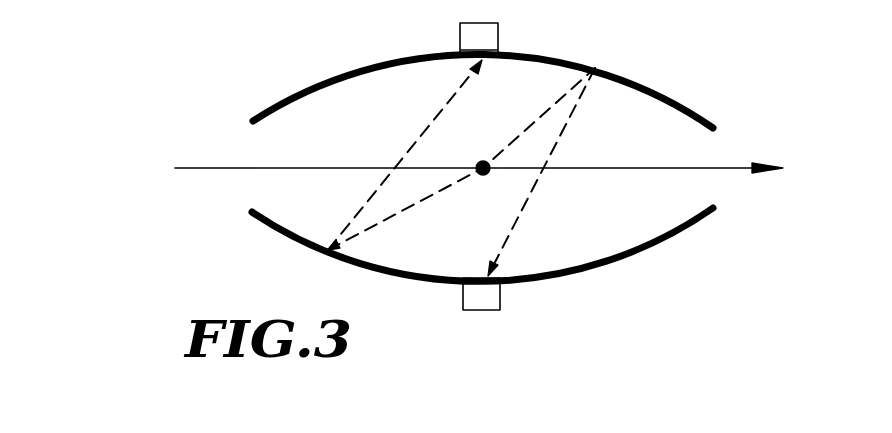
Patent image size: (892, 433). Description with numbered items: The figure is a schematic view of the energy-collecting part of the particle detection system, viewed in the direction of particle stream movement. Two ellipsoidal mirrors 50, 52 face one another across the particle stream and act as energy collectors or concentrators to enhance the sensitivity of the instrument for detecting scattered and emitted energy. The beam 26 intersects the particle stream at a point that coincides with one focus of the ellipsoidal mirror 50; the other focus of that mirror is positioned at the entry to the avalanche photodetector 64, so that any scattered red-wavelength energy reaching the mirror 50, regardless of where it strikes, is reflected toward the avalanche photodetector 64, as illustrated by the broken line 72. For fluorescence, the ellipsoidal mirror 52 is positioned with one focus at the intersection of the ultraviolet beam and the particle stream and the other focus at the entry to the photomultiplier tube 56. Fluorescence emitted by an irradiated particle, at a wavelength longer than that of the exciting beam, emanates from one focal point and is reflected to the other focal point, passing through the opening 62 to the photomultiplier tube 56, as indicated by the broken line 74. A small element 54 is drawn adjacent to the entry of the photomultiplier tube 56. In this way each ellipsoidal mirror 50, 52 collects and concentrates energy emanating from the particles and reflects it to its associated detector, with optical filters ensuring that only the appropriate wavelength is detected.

The beam 26 is at (195, 166).
The ellipsoidal mirror 50 is at (671, 248).
The ellipsoidal mirror 52 is at (323, 82).
The lower sensor element 54 is at (477, 272).
The photomultiplier tube 56 is at (495, 300).
The opening 62 is at (489, 58).
The avalanche photodetector 64 is at (489, 37).
The broken line 72 is at (420, 131).
The broken line 74 is at (565, 123).